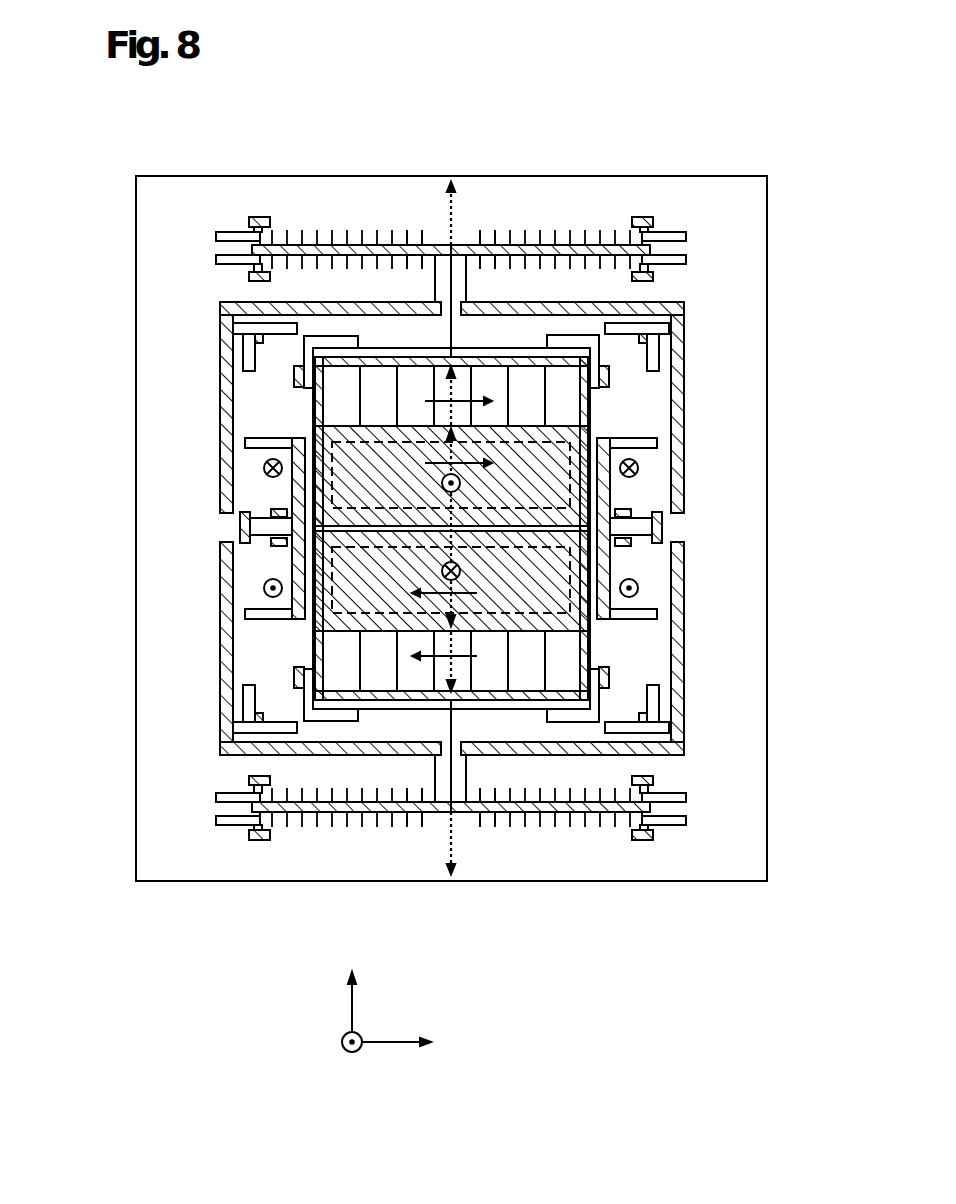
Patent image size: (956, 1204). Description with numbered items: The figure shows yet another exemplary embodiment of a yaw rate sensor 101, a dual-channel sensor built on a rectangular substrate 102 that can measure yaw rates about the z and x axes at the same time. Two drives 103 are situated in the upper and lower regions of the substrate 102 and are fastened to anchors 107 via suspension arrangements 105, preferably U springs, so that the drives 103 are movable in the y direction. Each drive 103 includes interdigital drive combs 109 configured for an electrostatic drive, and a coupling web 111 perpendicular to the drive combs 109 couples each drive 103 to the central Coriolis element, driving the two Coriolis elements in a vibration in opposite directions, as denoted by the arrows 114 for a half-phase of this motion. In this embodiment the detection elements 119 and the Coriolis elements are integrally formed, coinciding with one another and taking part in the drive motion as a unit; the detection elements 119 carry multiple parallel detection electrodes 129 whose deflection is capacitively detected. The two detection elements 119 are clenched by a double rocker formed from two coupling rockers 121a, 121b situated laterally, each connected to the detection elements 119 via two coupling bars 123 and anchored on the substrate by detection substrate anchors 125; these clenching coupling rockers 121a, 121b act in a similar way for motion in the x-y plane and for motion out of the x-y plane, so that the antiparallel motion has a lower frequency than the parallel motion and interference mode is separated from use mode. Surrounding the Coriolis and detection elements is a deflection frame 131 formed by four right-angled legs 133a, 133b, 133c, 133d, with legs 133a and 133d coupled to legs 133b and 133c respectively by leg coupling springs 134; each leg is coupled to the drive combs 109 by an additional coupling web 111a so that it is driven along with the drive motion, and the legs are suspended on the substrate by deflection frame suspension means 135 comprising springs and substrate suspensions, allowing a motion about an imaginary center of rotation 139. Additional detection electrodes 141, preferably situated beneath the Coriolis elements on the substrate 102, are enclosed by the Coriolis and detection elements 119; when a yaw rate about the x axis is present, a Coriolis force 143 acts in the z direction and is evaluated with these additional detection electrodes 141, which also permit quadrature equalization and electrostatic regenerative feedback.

The yaw rate sensor 101 is at (777, 128).
The substrate 102 is at (768, 188).
The drive 103 is at (220, 236).
The suspension arrangement 105 is at (222, 234).
The anchor 107 is at (258, 217).
The drive comb 109 is at (300, 245).
The coupling web 111 is at (538, 357).
The additional coupling web 111a is at (425, 268).
The arrow 114 is at (453, 178).
The detection element 119 is at (602, 352).
The coupling rocker 121a is at (240, 524).
The coupling rocker 121b is at (662, 524).
The coupling bar 123 is at (297, 385).
The detection substrate anchor 125 is at (265, 535).
The detection electrode 129 is at (648, 225).
The deflection frame 131 is at (296, 392).
The leg 133a is at (640, 443).
The leg 133b is at (640, 614).
The leg 133c is at (280, 614).
The leg 133d is at (280, 443).
The leg coupling spring 134 is at (275, 542).
The deflection frame suspension means 135 is at (235, 328).
The imaginary center of rotation 139 is at (222, 305).
The additional detection electrode 141 is at (288, 483).
The Coriolis force 143 is at (640, 470).